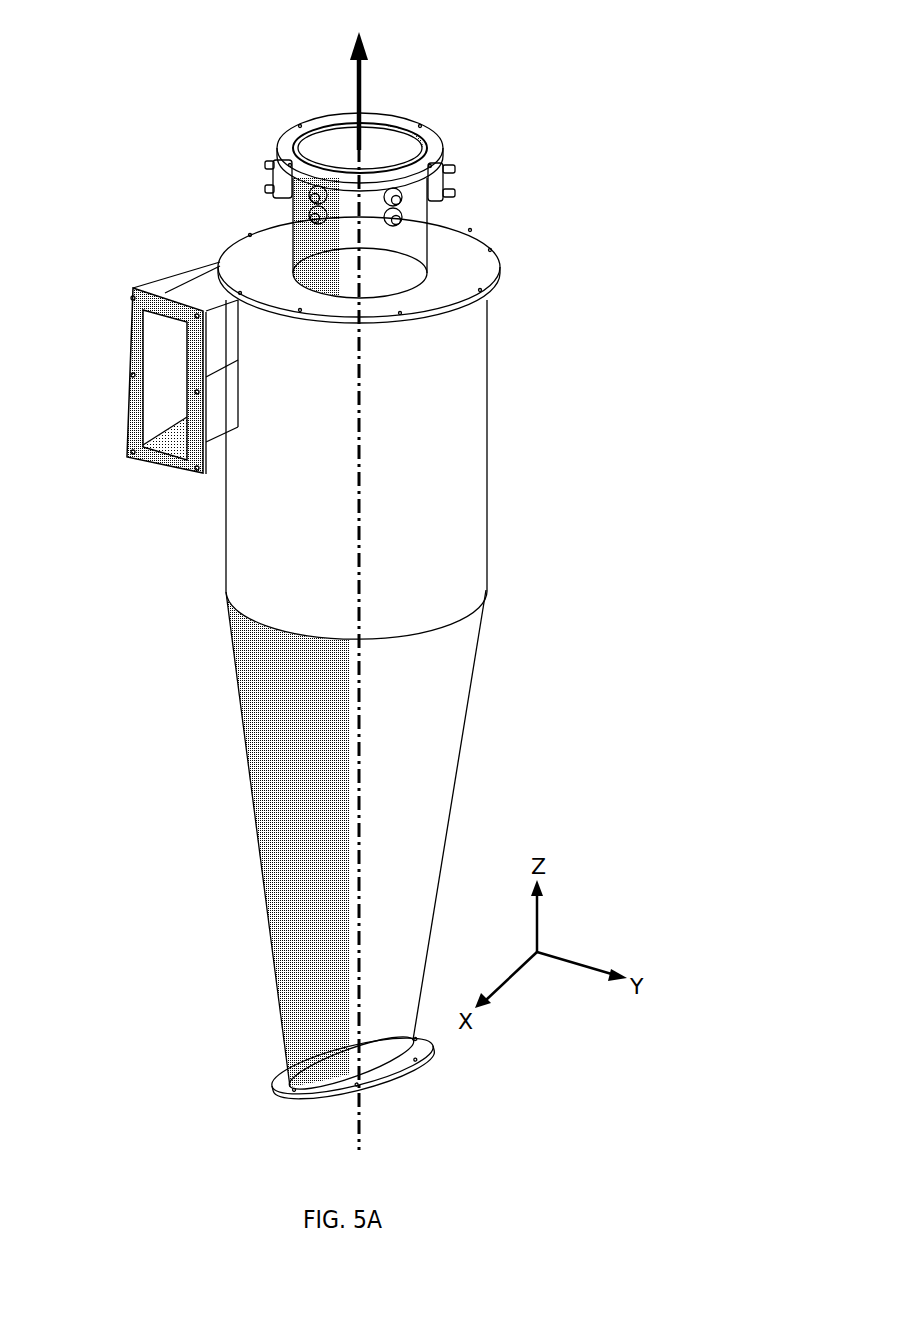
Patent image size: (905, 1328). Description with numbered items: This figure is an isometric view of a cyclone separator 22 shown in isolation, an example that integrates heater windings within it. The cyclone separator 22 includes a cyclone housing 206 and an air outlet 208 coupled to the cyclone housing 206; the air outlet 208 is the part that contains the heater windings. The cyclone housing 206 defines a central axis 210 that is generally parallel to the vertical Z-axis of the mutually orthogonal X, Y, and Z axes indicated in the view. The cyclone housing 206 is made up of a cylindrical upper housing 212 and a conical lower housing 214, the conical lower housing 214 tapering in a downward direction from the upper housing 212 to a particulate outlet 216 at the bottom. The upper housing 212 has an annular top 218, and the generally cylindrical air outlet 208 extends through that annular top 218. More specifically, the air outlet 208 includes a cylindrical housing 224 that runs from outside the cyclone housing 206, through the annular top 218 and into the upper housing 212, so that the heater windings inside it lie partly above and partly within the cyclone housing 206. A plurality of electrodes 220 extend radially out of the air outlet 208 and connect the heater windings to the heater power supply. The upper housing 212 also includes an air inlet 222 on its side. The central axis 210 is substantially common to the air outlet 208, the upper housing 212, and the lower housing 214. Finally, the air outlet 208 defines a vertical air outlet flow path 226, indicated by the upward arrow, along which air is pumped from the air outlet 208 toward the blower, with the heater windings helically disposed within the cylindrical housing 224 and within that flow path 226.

The cyclone separator 22 is at (449, 97).
The cyclone housing 206 is at (465, 612).
The air outlet 208 is at (402, 265).
The central axis 210 is at (360, 730).
The cylindrical upper housing 212 is at (465, 437).
The conical lower housing 214 is at (437, 803).
The particulate outlet 216 is at (397, 1080).
The annular top 218 is at (250, 268).
The electrodes 220 is at (273, 188).
The air inlet 222 is at (155, 408).
The cylindrical housing 224 is at (307, 127).
The air outlet flow path 226 is at (362, 82).